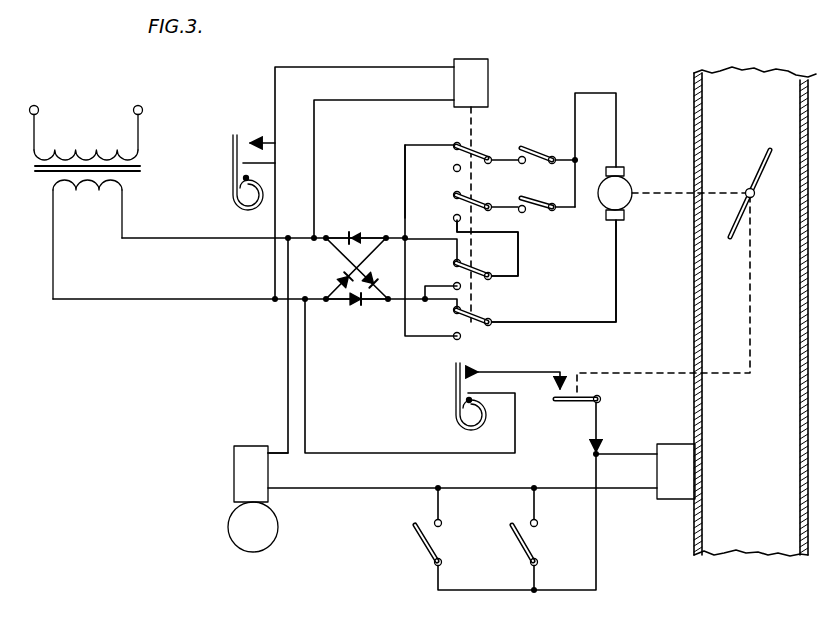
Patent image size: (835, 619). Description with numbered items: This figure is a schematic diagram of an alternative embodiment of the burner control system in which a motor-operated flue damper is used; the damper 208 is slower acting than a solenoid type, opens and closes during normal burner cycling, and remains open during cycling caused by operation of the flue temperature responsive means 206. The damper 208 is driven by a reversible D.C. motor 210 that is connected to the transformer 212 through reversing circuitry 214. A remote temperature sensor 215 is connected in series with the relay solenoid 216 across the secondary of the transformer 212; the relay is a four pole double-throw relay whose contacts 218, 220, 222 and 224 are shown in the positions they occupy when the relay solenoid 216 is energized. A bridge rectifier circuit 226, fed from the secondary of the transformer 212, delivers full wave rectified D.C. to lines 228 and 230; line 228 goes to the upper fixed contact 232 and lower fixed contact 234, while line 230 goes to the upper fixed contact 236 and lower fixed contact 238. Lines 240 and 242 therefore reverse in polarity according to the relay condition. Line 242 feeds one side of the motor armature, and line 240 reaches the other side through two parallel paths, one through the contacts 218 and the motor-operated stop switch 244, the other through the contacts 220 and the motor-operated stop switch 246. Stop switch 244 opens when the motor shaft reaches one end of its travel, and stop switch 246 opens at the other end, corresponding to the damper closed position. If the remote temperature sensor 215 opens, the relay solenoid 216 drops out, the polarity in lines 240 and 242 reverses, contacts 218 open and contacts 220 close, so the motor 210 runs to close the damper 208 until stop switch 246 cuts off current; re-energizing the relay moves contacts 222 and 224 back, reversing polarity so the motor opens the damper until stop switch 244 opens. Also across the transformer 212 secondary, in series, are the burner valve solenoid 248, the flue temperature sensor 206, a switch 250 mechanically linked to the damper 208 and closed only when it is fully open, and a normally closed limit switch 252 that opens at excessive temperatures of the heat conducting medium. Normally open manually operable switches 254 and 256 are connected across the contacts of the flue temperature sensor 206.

The flue temperature responsive means 206 is at (681, 497).
The damper 208 is at (757, 170).
The motor 210 is at (632, 184).
The transformer 212 is at (97, 185).
The reversing circuitry 214 is at (524, 118).
The remote temperature sensor 215 is at (232, 187).
The relay solenoid 216 is at (479, 72).
The relay contacts 218 is at (476, 157).
The relay contacts 220 is at (478, 204).
The relay contacts 222 is at (479, 272).
The relay contacts 224 is at (480, 318).
The bridge rectifier circuit 226 is at (349, 306).
The line 228 is at (387, 301).
The line 230 is at (397, 232).
The upper fixed contact 232 is at (454, 310).
The lower fixed contact 234 is at (453, 285).
The upper fixed contact 236 is at (453, 262).
The lower fixed contact 238 is at (454, 341).
The line 240 is at (519, 263).
The line 242 is at (585, 304).
The motor-operated stop switch 244 is at (536, 155).
The motor-operated stop switch 246 is at (537, 205).
The burner valve solenoid 248 is at (246, 460).
The switch 250 is at (573, 402).
The limit switch 252 is at (453, 398).
The manually operable switch 254 is at (516, 541).
The manually operable switch 256 is at (418, 536).